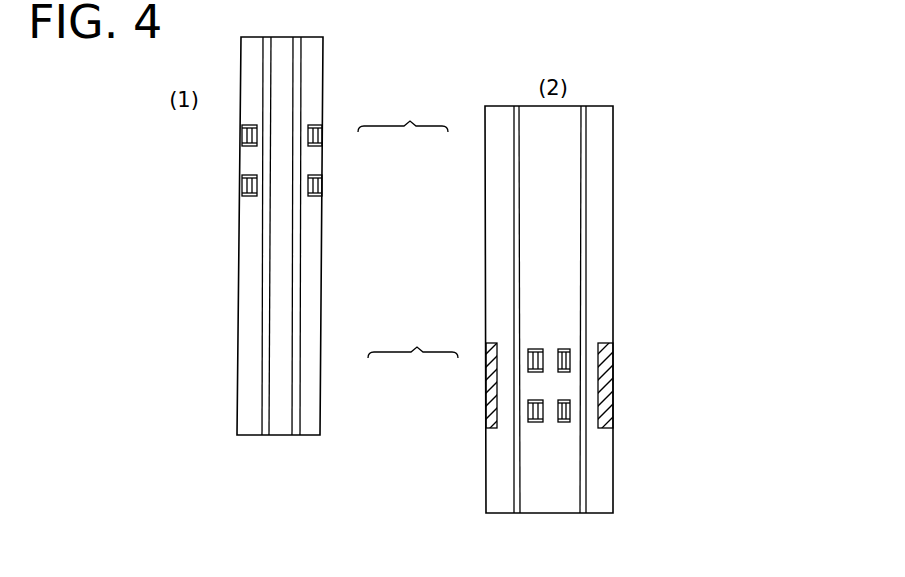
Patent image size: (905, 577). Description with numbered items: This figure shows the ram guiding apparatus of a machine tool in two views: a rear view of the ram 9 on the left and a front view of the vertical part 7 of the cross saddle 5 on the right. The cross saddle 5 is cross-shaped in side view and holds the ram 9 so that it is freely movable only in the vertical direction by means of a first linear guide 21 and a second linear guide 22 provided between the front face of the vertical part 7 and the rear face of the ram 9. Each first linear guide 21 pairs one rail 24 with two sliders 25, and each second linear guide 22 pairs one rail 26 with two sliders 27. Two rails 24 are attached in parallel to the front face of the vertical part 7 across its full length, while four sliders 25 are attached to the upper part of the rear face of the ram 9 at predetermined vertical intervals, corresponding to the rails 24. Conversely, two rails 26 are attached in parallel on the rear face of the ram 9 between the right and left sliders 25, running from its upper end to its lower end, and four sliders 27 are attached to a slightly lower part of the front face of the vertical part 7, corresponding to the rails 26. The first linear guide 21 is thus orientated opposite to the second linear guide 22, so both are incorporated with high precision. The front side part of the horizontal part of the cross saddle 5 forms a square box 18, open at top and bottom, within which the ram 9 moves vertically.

The ram 9 is at (286, 236).
The vertical part 7 is at (541, 309).
The cross saddle 5 is at (488, 416).
The box 18 is at (608, 383).
The first linear guide 21 is at (403, 113).
The second linear guide 22 is at (413, 340).
The rail 24 is at (581, 190).
The slider 25 is at (257, 143).
The rail 26 is at (270, 357).
The slider 27 is at (558, 372).